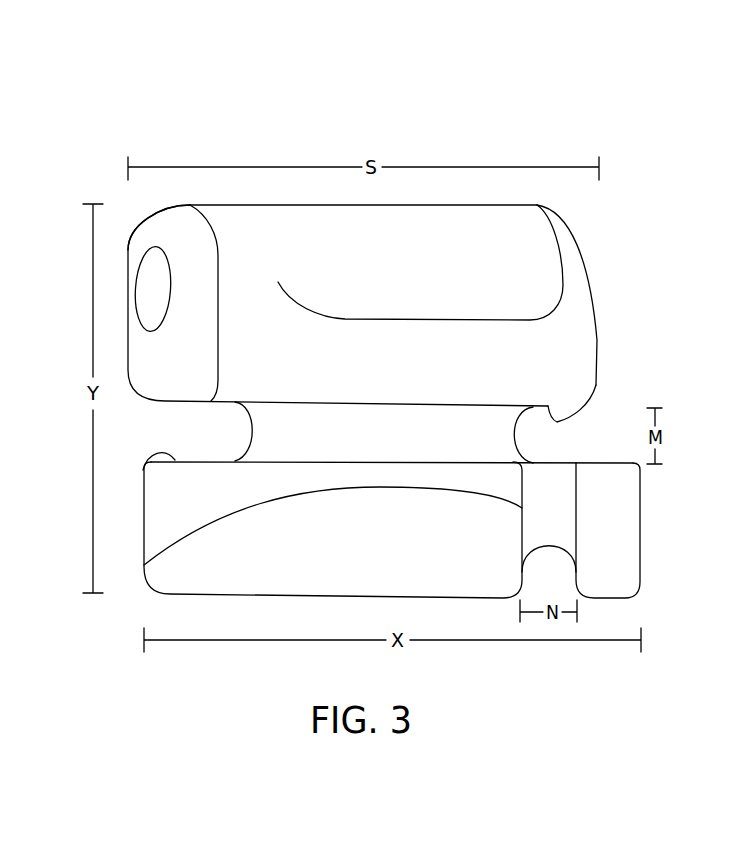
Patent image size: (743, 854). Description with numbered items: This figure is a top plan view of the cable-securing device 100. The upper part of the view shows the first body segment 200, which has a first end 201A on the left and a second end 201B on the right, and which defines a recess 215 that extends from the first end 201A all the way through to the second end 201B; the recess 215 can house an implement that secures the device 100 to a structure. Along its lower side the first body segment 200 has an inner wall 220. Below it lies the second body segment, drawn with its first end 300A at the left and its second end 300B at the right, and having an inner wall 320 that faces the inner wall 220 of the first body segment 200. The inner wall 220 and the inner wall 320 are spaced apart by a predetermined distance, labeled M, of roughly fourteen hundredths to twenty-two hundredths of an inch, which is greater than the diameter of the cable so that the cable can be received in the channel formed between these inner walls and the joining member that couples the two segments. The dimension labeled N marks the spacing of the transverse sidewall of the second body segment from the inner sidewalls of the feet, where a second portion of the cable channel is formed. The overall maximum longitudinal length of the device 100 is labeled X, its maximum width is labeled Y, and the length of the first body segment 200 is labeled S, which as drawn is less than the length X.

The device 100 is at (569, 121).
The first body segment 200 is at (407, 205).
The first end 201A is at (46, 206).
The second end 201B is at (659, 218).
The recess 215 is at (153, 250).
The inner wall 220 is at (560, 418).
The first end 300A is at (150, 583).
The second end 300B is at (642, 538).
The inner wall 320 is at (143, 470).